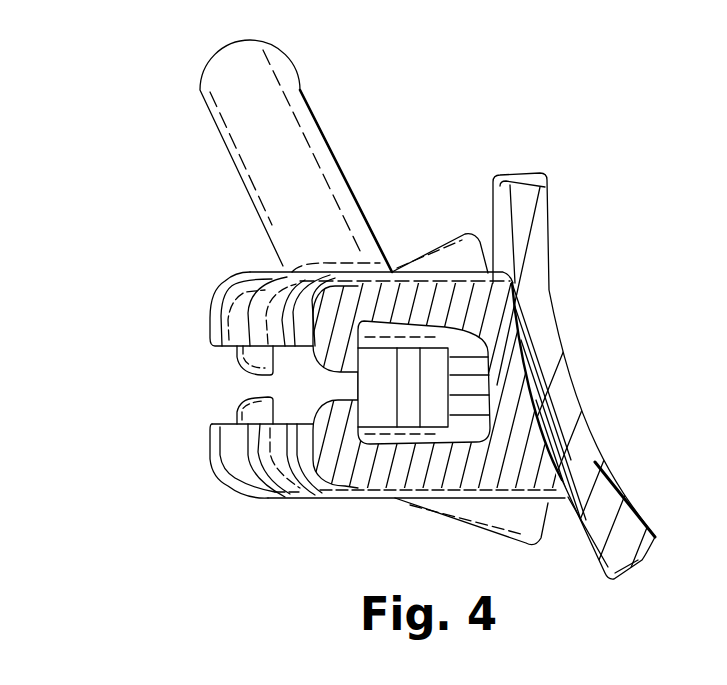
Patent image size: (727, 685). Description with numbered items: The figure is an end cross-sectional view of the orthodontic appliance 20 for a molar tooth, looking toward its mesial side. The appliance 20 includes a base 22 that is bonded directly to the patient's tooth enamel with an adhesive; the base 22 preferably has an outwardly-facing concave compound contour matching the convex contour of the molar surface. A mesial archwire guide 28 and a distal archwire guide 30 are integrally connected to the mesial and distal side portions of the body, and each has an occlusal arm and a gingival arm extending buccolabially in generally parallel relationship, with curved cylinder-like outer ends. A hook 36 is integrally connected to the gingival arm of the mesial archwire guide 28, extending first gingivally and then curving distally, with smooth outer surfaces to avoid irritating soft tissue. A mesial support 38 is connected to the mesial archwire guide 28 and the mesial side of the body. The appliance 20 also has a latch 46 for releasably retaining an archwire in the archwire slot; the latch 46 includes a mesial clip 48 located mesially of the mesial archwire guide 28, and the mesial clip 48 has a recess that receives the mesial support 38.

The orthodontic appliance 20 is at (128, 371).
The base 22 is at (600, 457).
The mesial archwire guide 28 is at (283, 488).
The distal archwire guide 30 is at (222, 465).
The hook 36 is at (218, 58).
The mesial support 38 is at (473, 388).
The latch 46 is at (205, 367).
The mesial clip 48 is at (435, 473).